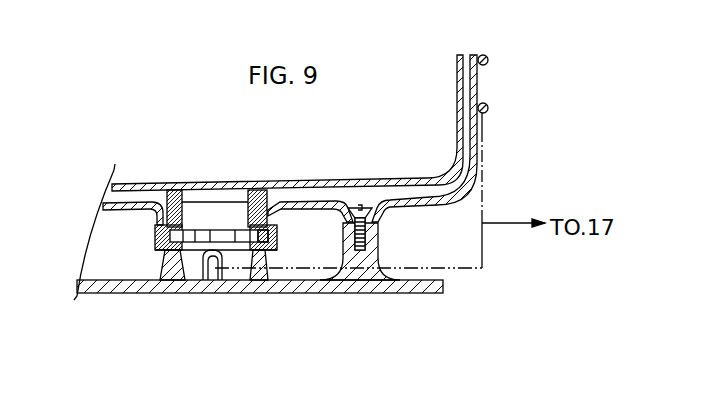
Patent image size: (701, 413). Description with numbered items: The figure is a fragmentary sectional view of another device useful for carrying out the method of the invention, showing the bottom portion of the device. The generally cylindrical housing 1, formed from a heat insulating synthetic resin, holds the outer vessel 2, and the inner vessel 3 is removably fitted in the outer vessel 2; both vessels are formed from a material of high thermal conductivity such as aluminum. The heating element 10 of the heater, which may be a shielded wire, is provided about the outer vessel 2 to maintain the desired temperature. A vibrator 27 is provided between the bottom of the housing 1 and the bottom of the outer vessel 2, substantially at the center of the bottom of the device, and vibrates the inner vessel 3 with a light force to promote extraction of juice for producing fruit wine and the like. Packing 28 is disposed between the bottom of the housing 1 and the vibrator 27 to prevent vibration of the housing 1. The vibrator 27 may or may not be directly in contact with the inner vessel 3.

The housing 1 is at (100, 293).
The outer vessel 2 is at (432, 209).
The inner vessel 3 is at (318, 183).
The heating element 10 is at (489, 107).
The vibrator 27 is at (190, 243).
The packing 28 is at (276, 237).